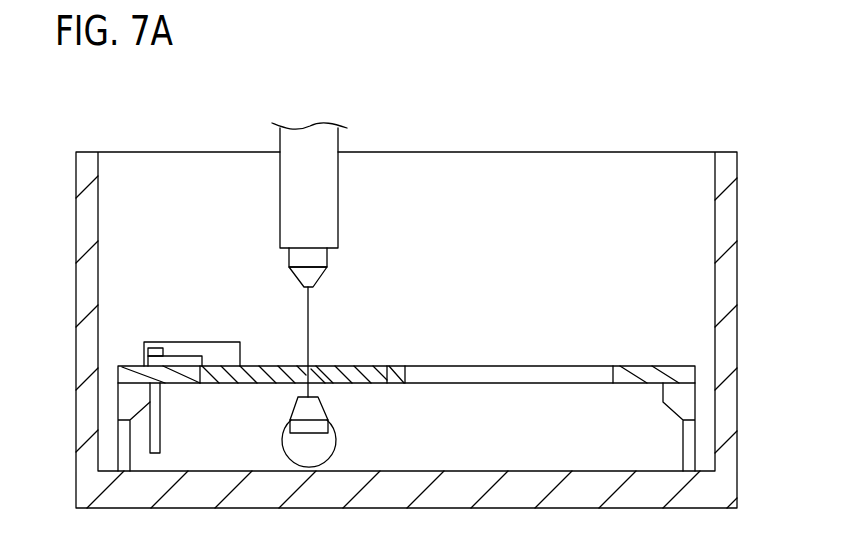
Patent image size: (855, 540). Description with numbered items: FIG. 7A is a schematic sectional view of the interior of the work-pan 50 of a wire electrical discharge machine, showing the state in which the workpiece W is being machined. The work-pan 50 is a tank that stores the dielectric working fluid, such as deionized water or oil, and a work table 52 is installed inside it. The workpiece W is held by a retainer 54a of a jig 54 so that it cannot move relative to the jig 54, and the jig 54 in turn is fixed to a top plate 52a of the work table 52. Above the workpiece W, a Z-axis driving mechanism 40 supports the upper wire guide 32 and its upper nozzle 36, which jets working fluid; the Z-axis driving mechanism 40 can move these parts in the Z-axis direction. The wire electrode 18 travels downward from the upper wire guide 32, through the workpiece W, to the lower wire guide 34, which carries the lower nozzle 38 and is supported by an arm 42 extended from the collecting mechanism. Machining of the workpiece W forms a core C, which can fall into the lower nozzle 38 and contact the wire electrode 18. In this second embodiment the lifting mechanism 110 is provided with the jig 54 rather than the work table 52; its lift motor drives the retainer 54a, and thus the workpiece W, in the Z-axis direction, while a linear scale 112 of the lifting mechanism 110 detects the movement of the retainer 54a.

The work-pan 50 is at (724, 221).
The Z-axis driving mechanism 40 is at (297, 220).
The upper wire guide 32 is at (318, 257).
The upper nozzle 36 is at (302, 273).
The wire electrode 18 is at (311, 302).
The jig 54 is at (178, 340).
The retainer 54a is at (256, 364).
The core C is at (322, 367).
The workpiece W is at (375, 365).
The work table 52 is at (659, 358).
The top plate 52a is at (640, 363).
The lifting mechanism 110 is at (148, 358).
The linear scale 112 is at (156, 348).
The lower nozzle 38 is at (298, 410).
The lower wire guide 34 is at (320, 427).
The arm 42 is at (293, 445).